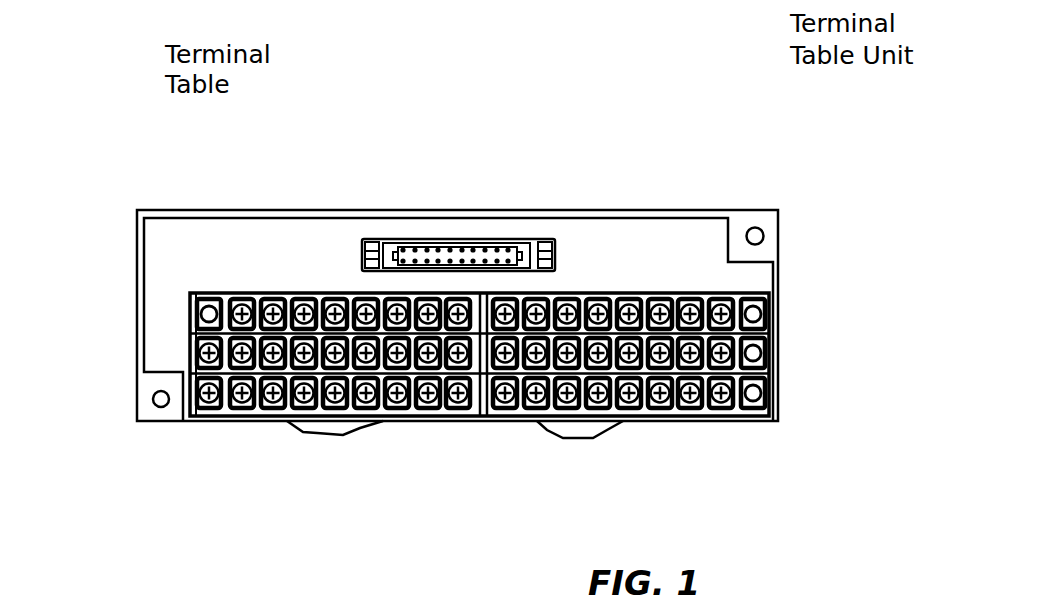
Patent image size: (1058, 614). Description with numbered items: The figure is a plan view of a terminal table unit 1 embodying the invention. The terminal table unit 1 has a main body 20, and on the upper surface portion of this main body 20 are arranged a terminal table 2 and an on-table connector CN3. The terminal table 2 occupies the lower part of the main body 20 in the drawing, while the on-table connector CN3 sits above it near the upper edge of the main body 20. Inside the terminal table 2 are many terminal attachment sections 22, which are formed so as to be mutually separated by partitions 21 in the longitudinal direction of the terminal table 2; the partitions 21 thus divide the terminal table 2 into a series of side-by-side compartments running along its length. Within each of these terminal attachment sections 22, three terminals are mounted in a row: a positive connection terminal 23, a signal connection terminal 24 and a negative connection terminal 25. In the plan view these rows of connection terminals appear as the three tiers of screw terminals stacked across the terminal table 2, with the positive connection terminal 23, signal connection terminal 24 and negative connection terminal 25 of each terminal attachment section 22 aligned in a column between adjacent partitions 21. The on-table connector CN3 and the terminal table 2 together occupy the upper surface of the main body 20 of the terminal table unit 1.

The terminal table unit 1 is at (796, 192).
The terminal table 2 is at (240, 278).
The main body 20 is at (147, 237).
The partitions 21 is at (253, 418).
The terminal attachment sections 22 is at (280, 418).
The positive connection terminal 23 is at (283, 300).
The signal connection terminal 24 is at (230, 418).
The negative connection terminal 25 is at (273, 418).
The on-table connector CN3 is at (443, 245).